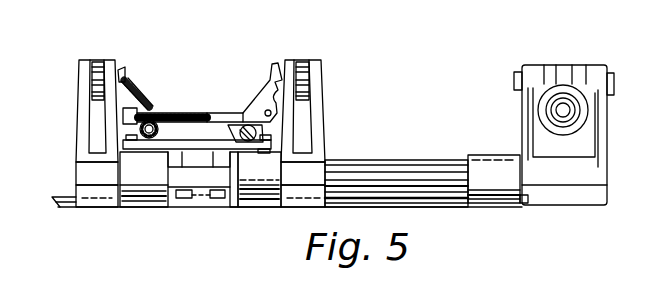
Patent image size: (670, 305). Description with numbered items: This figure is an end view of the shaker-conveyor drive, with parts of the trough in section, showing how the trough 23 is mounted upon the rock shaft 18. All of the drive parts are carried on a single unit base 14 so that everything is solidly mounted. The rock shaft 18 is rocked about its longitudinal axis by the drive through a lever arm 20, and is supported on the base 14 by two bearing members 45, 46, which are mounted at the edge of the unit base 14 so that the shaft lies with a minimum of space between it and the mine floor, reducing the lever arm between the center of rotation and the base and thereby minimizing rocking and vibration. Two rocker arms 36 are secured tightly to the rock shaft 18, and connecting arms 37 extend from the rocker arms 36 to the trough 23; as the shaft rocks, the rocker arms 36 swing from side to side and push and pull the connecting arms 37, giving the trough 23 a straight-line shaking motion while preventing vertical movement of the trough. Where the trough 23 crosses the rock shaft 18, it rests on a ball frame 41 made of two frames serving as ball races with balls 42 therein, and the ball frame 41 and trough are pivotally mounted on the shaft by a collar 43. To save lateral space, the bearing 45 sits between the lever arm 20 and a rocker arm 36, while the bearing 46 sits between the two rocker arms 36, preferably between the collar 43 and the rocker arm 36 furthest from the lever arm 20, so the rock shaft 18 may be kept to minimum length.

The unit base 14 is at (58, 201).
The rock shaft 18 is at (415, 159).
The lever arm 20 is at (588, 134).
The trough 23 is at (123, 71).
The rocker arm 36 is at (79, 90).
The connecting arm 37 is at (97, 59).
The ball frame 41 is at (181, 128).
The balls 42 is at (158, 122).
The collar 43 is at (206, 200).
The bearing member 45 is at (498, 204).
The bearing member 46 is at (138, 208).